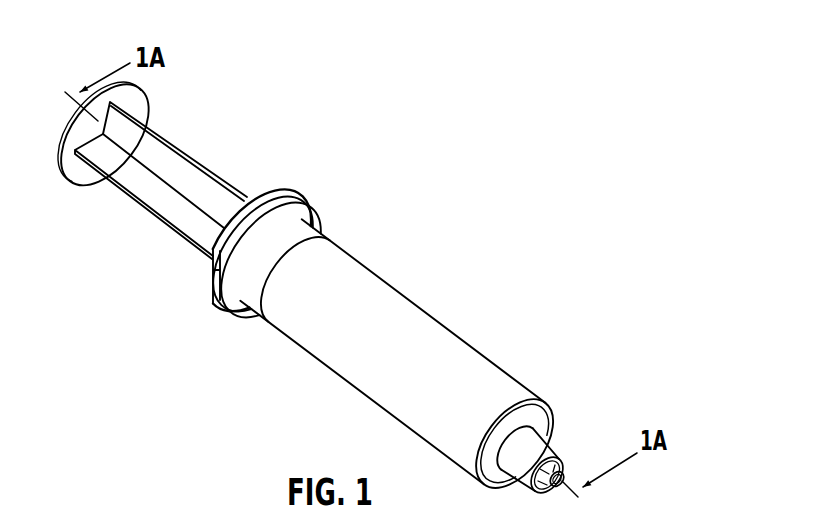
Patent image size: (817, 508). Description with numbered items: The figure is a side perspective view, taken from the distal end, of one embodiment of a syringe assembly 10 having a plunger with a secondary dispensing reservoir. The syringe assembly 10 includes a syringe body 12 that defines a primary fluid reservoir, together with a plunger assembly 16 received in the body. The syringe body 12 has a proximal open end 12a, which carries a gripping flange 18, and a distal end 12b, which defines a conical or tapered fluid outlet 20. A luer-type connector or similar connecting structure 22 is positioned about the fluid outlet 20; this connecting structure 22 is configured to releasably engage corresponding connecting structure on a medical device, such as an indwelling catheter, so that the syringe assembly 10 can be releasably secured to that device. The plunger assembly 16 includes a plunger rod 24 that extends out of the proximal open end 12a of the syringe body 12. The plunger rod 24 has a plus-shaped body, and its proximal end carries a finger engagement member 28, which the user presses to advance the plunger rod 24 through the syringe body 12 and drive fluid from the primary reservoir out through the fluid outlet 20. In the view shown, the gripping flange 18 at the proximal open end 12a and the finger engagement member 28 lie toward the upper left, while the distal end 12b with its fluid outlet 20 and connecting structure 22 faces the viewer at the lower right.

The syringe assembly 10 is at (527, 94).
The syringe body 12 is at (427, 320).
The proximal open end 12a is at (302, 224).
The distal end 12b is at (512, 388).
The plunger assembly 16 is at (131, 174).
The gripping flange 18 is at (268, 188).
The fluid outlet 20 is at (557, 456).
The connecting structure 22 is at (538, 448).
The plunger rod 24 is at (148, 192).
The finger engagement member 28 is at (72, 168).